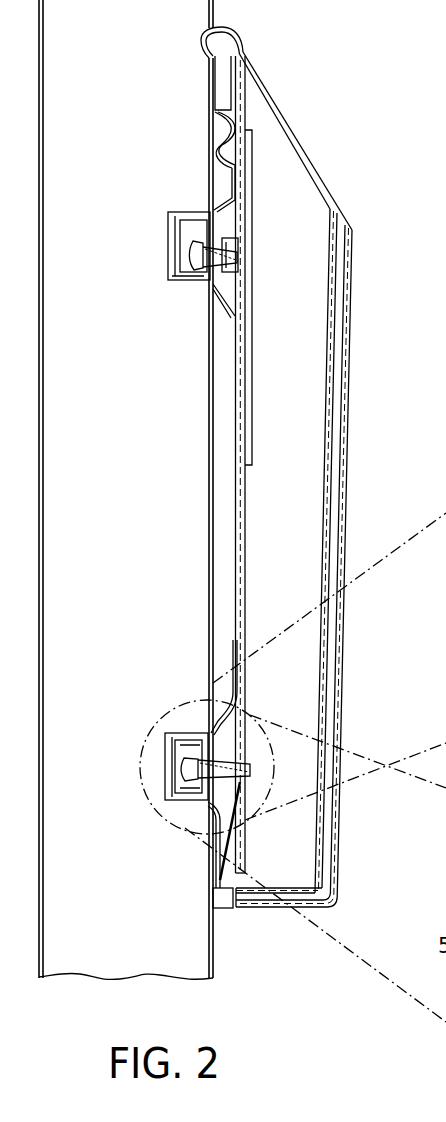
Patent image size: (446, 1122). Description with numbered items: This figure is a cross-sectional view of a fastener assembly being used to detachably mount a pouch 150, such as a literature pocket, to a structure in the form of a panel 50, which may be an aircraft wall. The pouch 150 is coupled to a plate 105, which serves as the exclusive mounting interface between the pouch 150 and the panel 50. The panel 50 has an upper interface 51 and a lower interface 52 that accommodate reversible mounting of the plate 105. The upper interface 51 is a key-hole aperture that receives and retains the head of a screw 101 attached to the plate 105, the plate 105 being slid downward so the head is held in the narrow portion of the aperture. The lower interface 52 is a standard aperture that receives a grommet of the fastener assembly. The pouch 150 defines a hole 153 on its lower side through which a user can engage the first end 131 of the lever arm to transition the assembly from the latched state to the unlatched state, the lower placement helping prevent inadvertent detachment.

The panel 50 is at (139, 84).
The upper interface 51 is at (172, 228).
The lower interface 52 is at (173, 792).
The screw 101 is at (205, 281).
The plate 105 is at (243, 483).
The first end 131 is at (217, 880).
The pouch 150 is at (366, 204).
The hole 153 is at (225, 910).